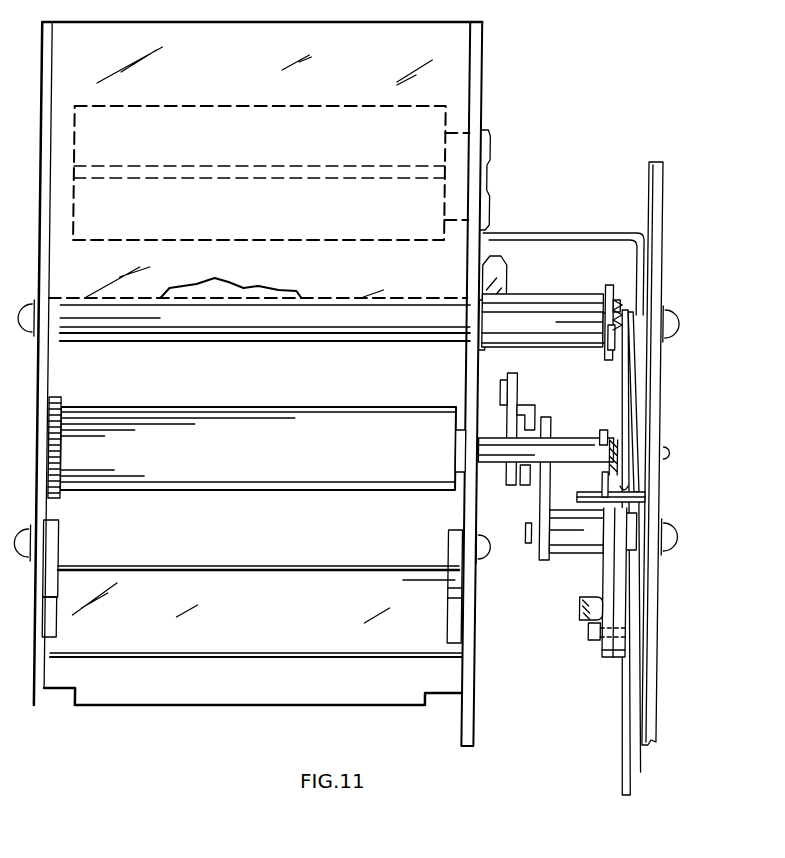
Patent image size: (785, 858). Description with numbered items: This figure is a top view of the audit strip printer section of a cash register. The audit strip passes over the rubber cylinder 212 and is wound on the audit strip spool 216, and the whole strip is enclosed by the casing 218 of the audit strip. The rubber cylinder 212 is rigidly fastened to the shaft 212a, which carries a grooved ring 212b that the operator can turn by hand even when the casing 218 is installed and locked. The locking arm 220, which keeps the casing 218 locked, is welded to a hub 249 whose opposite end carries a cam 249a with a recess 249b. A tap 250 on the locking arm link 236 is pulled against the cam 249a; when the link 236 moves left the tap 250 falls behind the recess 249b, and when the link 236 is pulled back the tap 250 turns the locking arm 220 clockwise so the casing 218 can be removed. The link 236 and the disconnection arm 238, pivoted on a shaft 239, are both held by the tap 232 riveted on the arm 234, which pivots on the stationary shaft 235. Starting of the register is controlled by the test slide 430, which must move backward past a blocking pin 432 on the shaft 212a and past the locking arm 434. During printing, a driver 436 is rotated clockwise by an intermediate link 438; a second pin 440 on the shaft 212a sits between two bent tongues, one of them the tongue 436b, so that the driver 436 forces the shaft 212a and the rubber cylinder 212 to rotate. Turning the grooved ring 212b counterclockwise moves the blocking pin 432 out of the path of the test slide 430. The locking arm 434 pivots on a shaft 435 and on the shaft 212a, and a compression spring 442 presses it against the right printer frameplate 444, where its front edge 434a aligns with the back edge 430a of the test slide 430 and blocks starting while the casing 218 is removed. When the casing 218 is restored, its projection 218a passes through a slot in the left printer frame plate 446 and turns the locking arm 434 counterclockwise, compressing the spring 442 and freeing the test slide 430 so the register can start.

The audit strip spool 216 is at (192, 122).
The casing of the audit strip 218 is at (210, 275).
The projection 218a is at (498, 263).
The rubber cylinder 212 is at (196, 430).
The shaft 212a is at (582, 448).
The grooved ring 212b is at (62, 397).
The locking arm 220 is at (482, 348).
The hub 249 is at (533, 310).
The cam 249a is at (611, 297).
The recess 249b is at (612, 295).
The tap 250 is at (616, 327).
The locking arm link 236 is at (626, 397).
The tap 232 is at (596, 632).
The arm 234 is at (604, 658).
The stationary shaft 235 is at (587, 607).
The disconnection arm 238 is at (605, 578).
The shaft 239 is at (533, 542).
The test slide 430 is at (640, 580).
The back edge 430a is at (643, 498).
The blocking pin 432 is at (610, 485).
The locking arm 434 is at (637, 372).
The front edge 434a is at (645, 489).
The shaft 435 is at (637, 307).
The driver 436 is at (512, 430).
The bended tongue 436b is at (532, 410).
The intermediate link 438 is at (505, 383).
The second pin 440 is at (528, 483).
The compression spring 442 is at (627, 442).
The right printer frameplate 444 is at (647, 668).
The left printer frame plate 446 is at (487, 155).